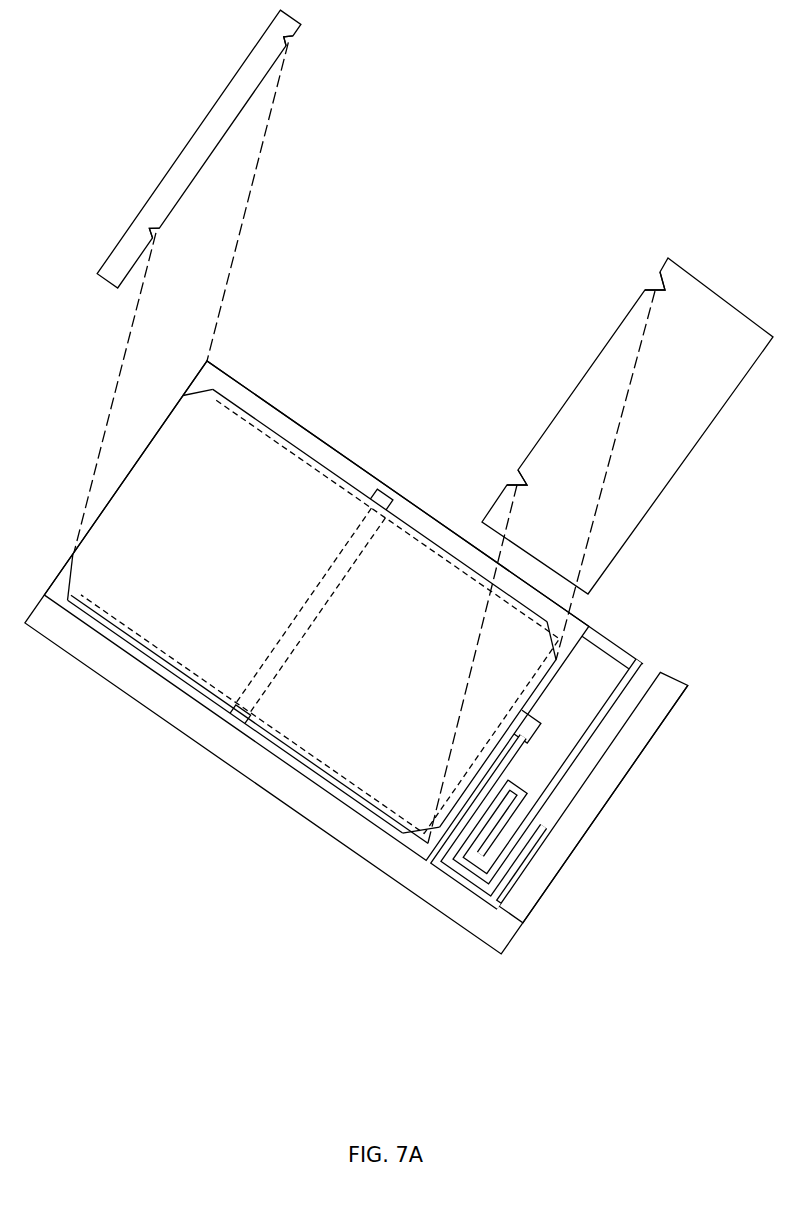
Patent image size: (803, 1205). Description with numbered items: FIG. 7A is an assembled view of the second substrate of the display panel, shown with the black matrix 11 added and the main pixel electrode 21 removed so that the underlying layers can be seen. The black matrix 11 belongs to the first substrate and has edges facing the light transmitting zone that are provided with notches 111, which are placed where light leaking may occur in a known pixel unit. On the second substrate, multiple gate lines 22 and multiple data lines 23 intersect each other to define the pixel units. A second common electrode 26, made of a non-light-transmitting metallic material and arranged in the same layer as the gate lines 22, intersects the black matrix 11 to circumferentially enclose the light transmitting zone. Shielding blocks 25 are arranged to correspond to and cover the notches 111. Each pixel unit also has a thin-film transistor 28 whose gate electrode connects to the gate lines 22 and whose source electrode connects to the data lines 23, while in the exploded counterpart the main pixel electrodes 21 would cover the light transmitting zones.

The black matrix 11 is at (213, 127).
The notches 111 is at (290, 38).
The main pixel electrodes 21 is at (153, 482).
The gate lines 22 is at (638, 740).
The data lines 23 is at (227, 755).
The shielding blocks 25 is at (202, 392).
The second common electrode 26 is at (303, 443).
The thin-film transistors 28 is at (543, 848).